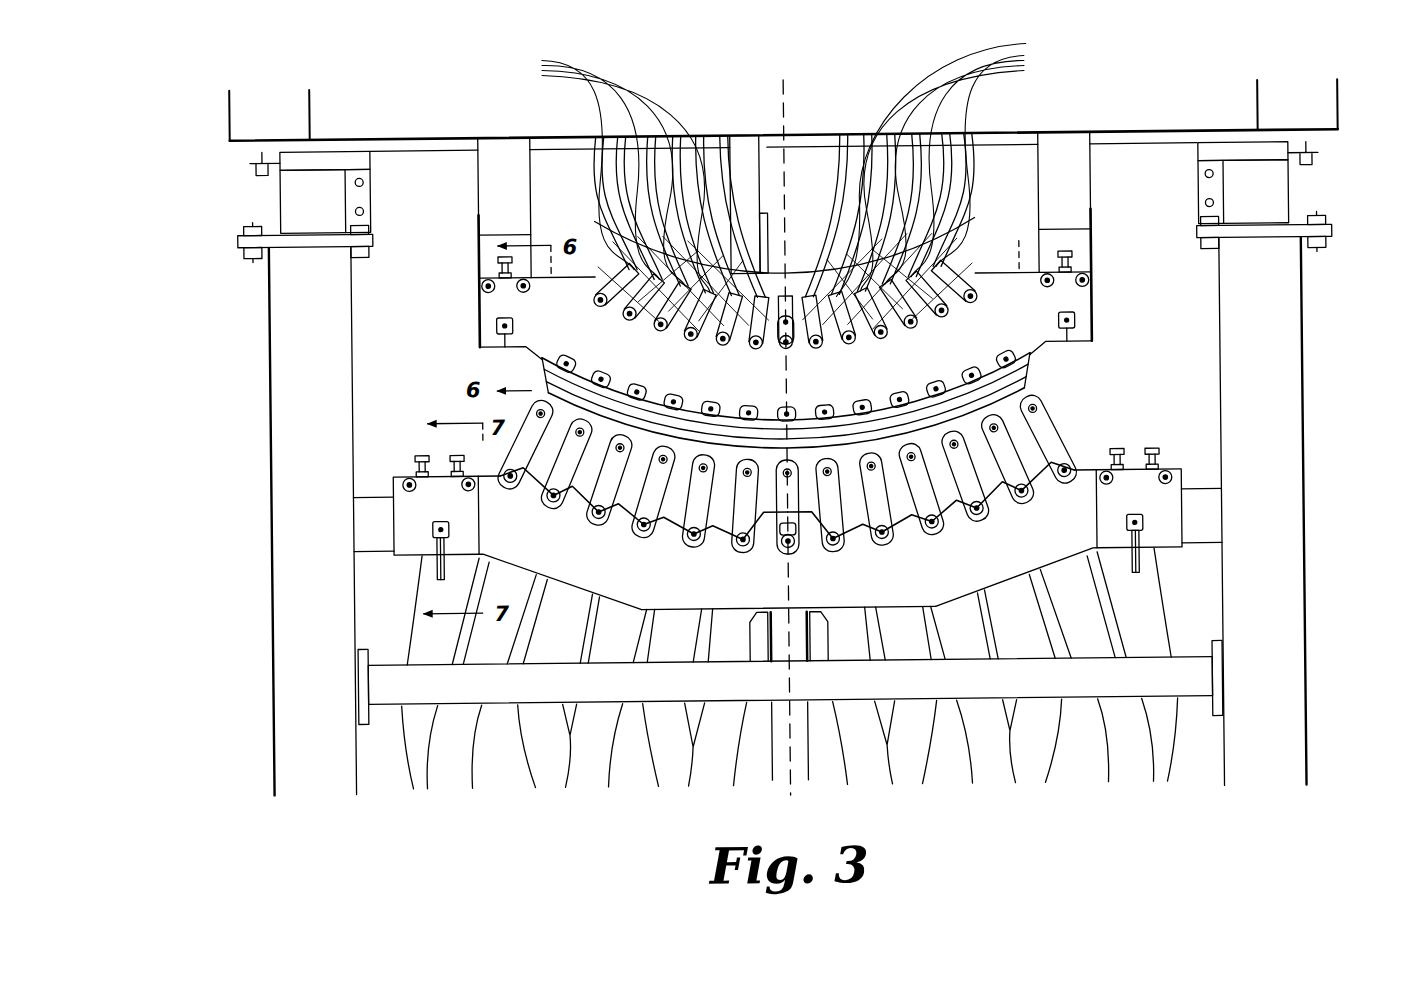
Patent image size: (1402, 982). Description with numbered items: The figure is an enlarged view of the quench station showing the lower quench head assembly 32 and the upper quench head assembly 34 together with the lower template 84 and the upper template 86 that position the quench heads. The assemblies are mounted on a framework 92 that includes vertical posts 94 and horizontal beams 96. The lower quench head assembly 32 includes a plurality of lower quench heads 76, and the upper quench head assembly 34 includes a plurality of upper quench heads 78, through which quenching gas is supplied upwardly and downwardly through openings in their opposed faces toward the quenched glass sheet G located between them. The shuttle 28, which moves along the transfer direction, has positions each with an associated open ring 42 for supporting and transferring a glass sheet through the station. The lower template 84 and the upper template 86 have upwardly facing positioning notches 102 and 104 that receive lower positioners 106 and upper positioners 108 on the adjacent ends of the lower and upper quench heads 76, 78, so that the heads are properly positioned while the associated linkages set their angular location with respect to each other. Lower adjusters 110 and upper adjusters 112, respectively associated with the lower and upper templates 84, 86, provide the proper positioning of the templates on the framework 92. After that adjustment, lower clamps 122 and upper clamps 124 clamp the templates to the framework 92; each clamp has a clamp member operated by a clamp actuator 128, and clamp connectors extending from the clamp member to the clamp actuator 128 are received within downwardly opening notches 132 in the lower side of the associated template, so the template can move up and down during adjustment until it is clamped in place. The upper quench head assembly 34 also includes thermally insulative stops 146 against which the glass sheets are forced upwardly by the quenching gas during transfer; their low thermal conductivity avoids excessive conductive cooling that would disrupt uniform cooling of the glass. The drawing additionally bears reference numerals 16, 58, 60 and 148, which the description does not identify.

The yarn guiding apparatus / frame 16 is at (1180, 95).
The shuttle 28 is at (1046, 380).
The lower quench head assembly 32 is at (830, 491).
The upper quench head assembly 34 is at (530, 356).
The open ring 42 is at (634, 487).
The yarn strands 58 is at (563, 642).
The feed wires 60 is at (779, 60).
The lower quench heads 76 is at (600, 455).
The upper quench heads 78 is at (632, 252).
The lower template 84 is at (572, 329).
The upper template 86 is at (480, 513).
The framework 92 is at (264, 360).
The vertical posts 94 is at (285, 402).
The horizontal beams 96 is at (1073, 672).
The positioning notches 102 is at (688, 538).
The lower positioners 106 is at (741, 548).
The positioning notches 104 is at (697, 340).
The upper positioners 108 is at (697, 341).
The lower adjusters 110 is at (455, 458).
The upper adjusters 112 is at (500, 266).
The lower clamps 122 is at (428, 528).
The upper clamps 124 is at (496, 325).
The clamp actuators 128 is at (446, 572).
The downwardly opening notches 132 is at (537, 358).
The thermally insulative stops 146 is at (574, 362).
The vertical plate 148 is at (476, 234).
The glass sheet G is at (1031, 358).